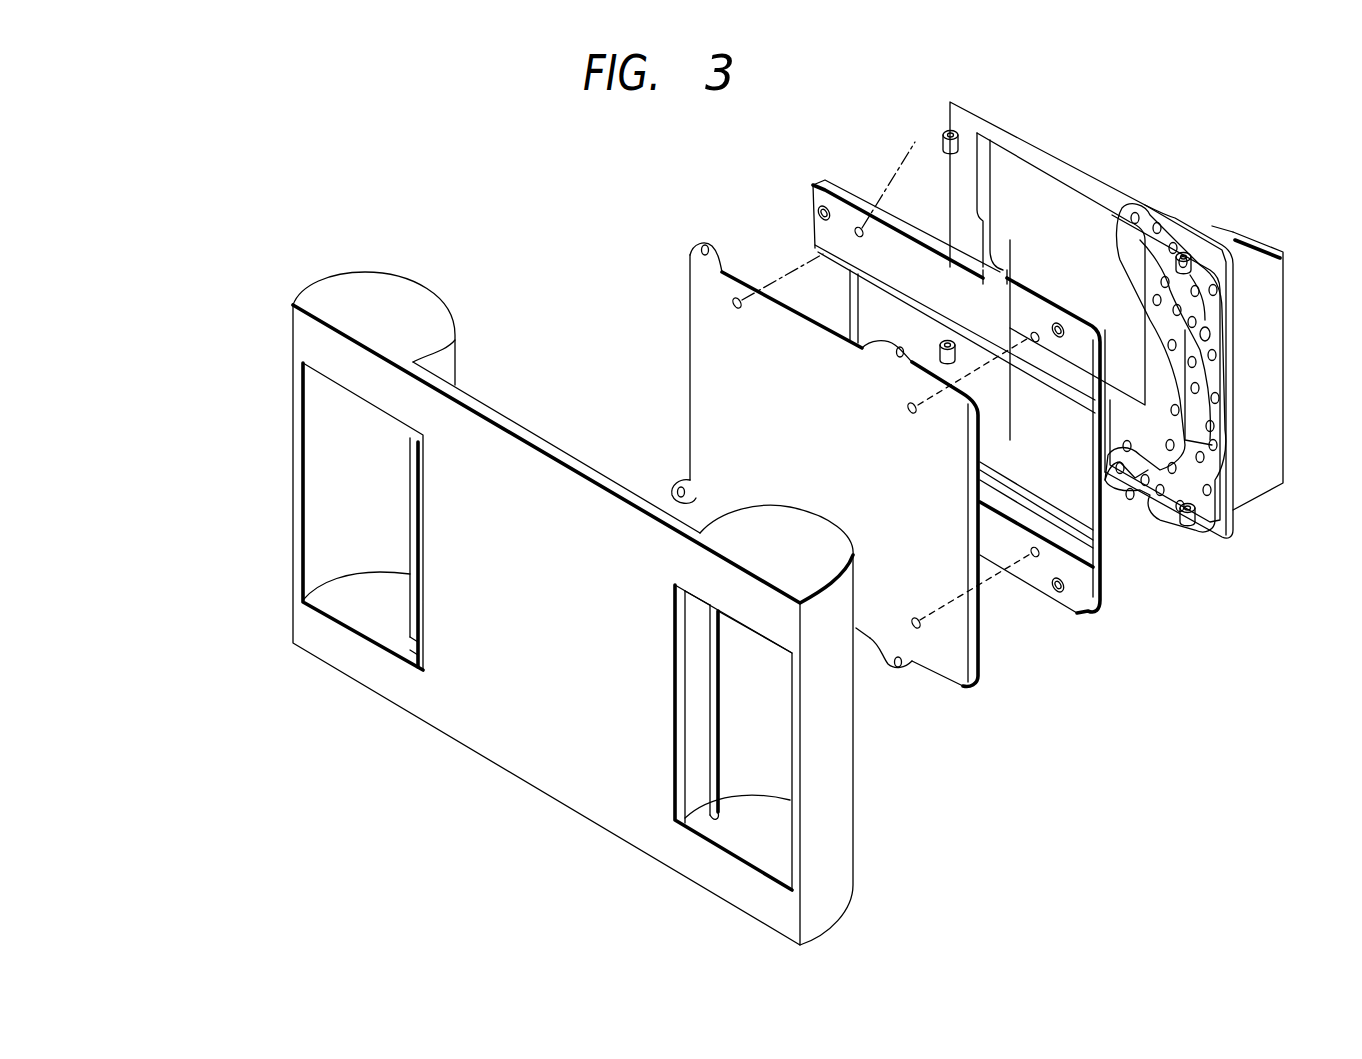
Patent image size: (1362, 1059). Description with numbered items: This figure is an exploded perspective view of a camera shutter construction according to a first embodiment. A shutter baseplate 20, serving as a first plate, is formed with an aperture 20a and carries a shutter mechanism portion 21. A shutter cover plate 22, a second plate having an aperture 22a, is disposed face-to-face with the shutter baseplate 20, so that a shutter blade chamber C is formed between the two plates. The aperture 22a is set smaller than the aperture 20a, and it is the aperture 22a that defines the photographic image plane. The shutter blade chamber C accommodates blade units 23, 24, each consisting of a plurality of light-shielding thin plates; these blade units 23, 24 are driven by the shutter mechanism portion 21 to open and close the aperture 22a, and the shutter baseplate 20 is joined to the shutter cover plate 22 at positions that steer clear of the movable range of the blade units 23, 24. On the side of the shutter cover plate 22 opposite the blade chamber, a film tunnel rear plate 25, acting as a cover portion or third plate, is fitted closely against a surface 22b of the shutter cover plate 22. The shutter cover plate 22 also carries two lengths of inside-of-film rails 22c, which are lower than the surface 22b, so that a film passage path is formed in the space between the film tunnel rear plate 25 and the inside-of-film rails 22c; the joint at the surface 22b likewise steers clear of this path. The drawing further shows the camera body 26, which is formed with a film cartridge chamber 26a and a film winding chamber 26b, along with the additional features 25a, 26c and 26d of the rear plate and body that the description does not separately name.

The shutter baseplate 20 is at (1090, 345).
The aperture 20a is at (975, 220).
The shutter mechanism portion 21 is at (1270, 427).
The shutter cover plate 22 is at (988, 423).
The aperture 22a is at (862, 303).
The surface 22b is at (1008, 302).
The inside-of-film rails 22c is at (1088, 528).
The blade unit 23 is at (1200, 468).
The blade unit 24 is at (1207, 317).
The film tunnel rear plate 25 is at (816, 454).
The mounting tab 25a is at (900, 345).
The camera body 26 is at (537, 581).
The film cartridge chamber 26a is at (750, 848).
The film winding chamber 26b is at (352, 610).
The slot 26c is at (717, 788).
The slot 26d is at (407, 640).
The shutter blade chamber C is at (1210, 270).